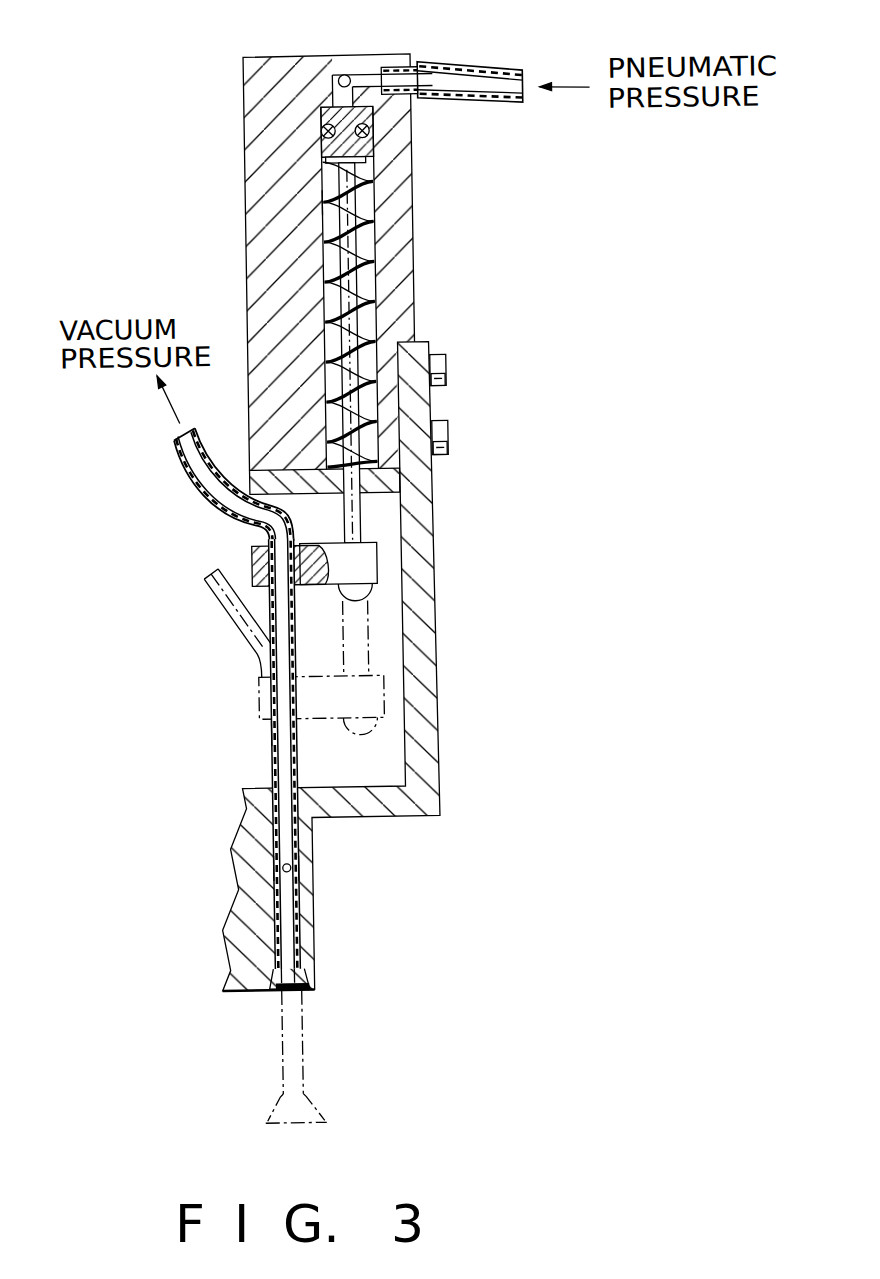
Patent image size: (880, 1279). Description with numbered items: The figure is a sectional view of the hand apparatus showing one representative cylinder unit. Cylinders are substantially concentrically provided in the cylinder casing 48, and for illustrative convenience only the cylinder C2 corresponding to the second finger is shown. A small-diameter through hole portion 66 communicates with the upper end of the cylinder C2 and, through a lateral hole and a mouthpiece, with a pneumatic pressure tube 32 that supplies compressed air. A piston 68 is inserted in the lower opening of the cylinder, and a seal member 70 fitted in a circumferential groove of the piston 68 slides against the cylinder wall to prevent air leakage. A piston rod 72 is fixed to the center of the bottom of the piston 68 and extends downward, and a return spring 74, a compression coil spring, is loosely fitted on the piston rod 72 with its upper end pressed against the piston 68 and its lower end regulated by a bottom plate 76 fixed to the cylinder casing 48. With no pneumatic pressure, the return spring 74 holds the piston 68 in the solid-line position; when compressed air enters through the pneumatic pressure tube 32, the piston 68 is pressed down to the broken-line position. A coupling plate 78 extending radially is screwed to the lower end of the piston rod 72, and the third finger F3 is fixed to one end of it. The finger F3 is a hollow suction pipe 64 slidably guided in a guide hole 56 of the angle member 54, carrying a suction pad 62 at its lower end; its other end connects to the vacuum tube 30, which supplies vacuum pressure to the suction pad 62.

The cylinder casing 48 is at (306, 74).
The small-diameter through hole portion 66 is at (352, 75).
The pneumatic pressure tube 32 is at (489, 64).
The seal member 70 is at (376, 131).
The piston 68 is at (378, 152).
The cylinder C2 is at (329, 203).
The return spring 74 is at (379, 269).
The bottom plate 76 is at (395, 479).
The piston rod 72 is at (360, 530).
The coupling plate 78 is at (376, 560).
The vacuum tube 30 is at (197, 470).
The third finger F3 is at (264, 730).
The suction pipe 64 is at (266, 748).
The guide hole 56 is at (271, 868).
The angle member 54 is at (336, 881).
The suction pad 62 is at (283, 988).